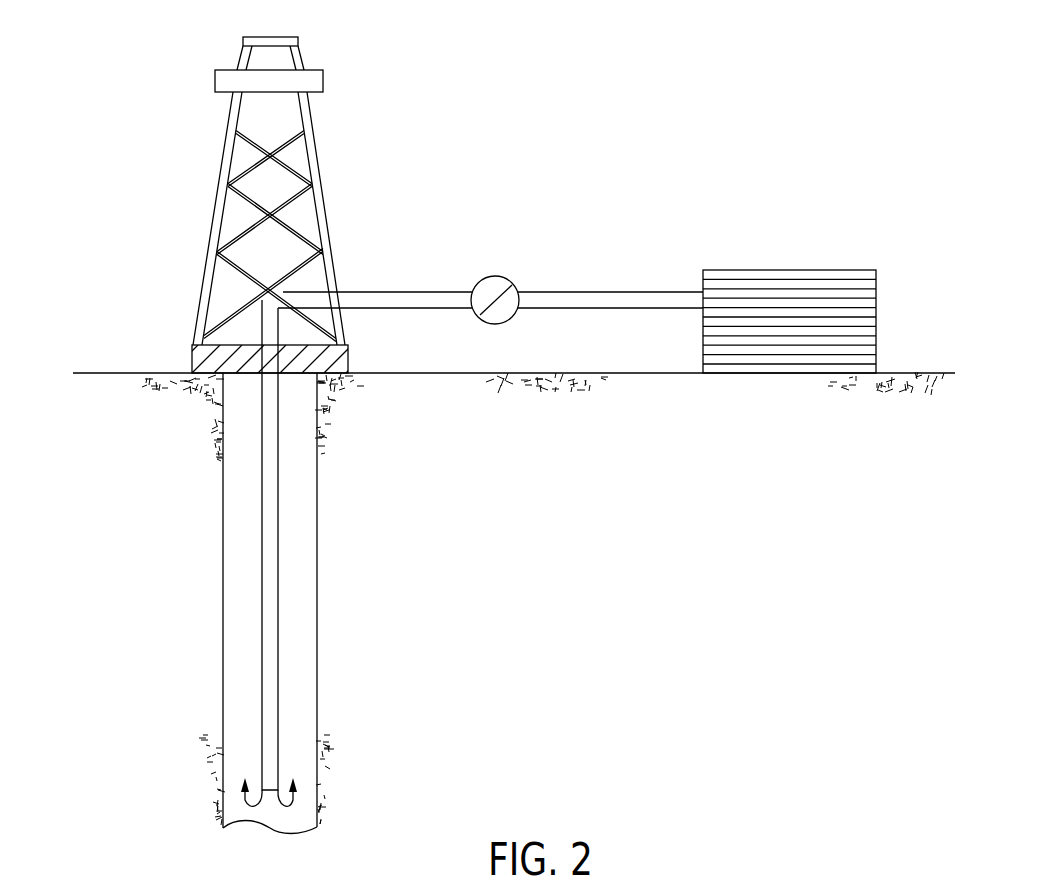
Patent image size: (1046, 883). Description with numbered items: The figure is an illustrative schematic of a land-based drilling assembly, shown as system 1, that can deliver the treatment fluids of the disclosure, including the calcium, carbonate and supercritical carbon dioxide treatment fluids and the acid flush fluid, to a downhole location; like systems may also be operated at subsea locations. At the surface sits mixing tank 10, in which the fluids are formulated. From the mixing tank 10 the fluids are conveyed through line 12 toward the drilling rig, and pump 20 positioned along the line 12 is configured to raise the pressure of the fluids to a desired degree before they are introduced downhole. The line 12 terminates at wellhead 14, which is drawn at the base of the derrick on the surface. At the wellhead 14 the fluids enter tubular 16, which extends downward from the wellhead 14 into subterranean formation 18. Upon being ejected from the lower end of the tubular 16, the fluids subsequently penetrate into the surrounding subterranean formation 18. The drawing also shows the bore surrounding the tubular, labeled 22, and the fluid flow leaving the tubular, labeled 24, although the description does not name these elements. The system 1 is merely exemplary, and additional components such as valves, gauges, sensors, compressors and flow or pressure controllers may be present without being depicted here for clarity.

The system 1 is at (116, 64).
The mixing tank 10 is at (743, 270).
The line 12 is at (387, 290).
The wellhead 14 is at (192, 360).
The tubular 16 is at (278, 521).
The subterranean formation 18 is at (135, 615).
The pump 20 is at (493, 276).
The wellbore 22 is at (317, 630).
The fluid flow 24 is at (247, 806).